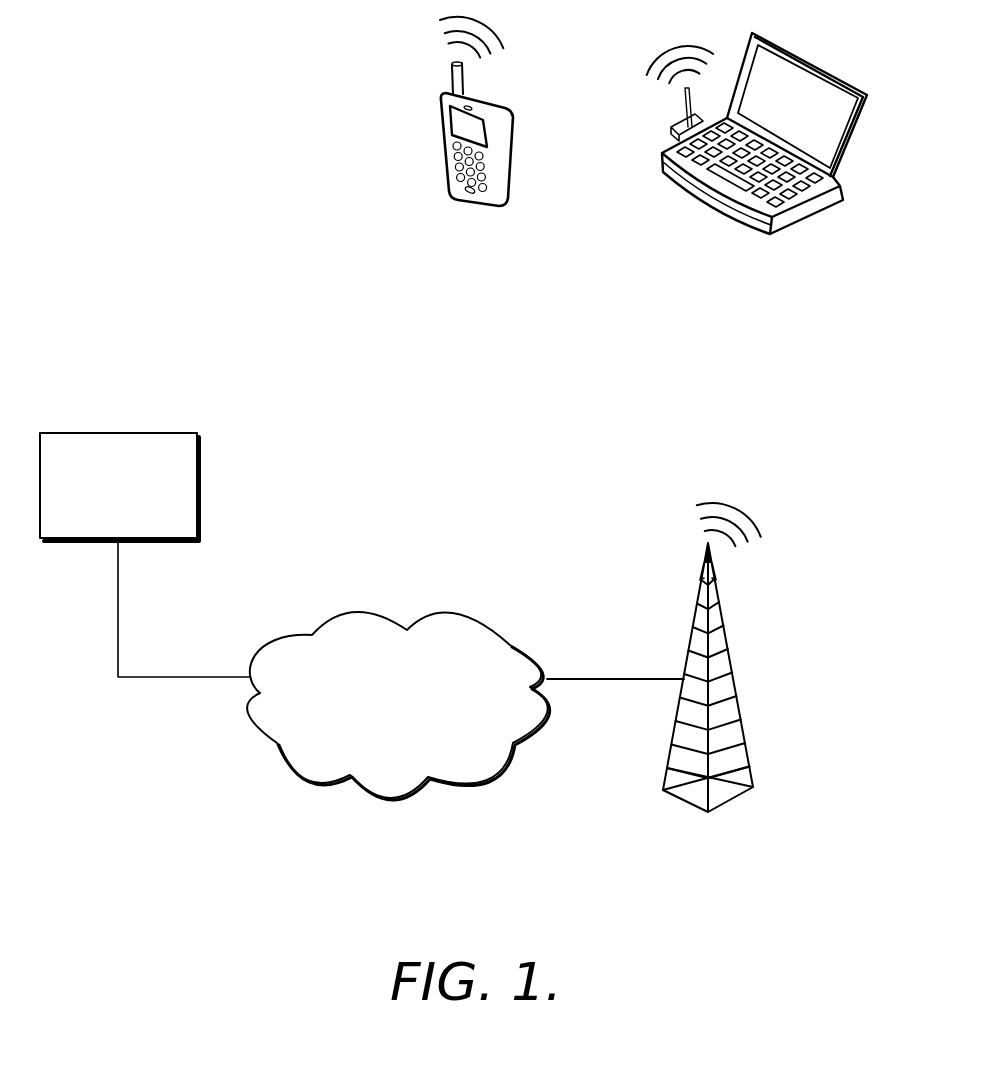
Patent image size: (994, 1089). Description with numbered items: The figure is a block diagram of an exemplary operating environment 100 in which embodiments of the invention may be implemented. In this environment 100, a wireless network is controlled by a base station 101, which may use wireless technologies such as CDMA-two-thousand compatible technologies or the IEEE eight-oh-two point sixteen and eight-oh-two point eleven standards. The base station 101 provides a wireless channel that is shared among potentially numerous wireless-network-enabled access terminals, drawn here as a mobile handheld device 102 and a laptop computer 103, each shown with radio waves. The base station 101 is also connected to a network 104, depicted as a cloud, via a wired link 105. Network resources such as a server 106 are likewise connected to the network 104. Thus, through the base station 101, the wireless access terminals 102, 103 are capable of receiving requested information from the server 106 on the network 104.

The environment 100 is at (98, 136).
The base station 101 is at (741, 716).
The mobile handheld device 102 is at (440, 137).
The laptop computer 103 is at (658, 163).
The network 104 is at (453, 616).
The wired link 105 is at (602, 679).
The server 106 is at (118, 433).